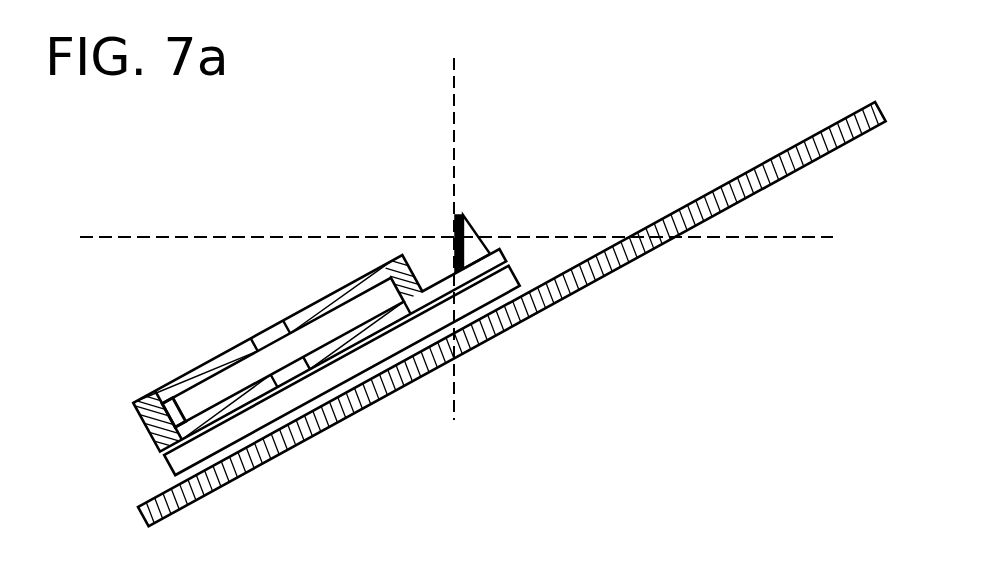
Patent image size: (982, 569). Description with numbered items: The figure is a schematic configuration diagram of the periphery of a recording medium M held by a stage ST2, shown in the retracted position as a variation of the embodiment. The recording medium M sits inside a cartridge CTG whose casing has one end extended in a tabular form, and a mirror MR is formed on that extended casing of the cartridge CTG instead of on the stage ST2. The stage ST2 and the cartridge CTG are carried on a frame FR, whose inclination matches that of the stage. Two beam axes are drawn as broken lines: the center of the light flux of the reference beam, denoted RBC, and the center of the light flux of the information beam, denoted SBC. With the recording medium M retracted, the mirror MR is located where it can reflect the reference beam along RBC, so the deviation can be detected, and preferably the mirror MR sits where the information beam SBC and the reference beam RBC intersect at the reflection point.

The frame FR is at (548, 308).
The stage ST2 is at (305, 393).
The cartridge CTG is at (302, 309).
The recording medium M is at (180, 408).
The mirror MR is at (455, 231).
The center of light flux of the information beam SBC is at (457, 220).
The center of light flux of the reference beam RBC is at (178, 237).